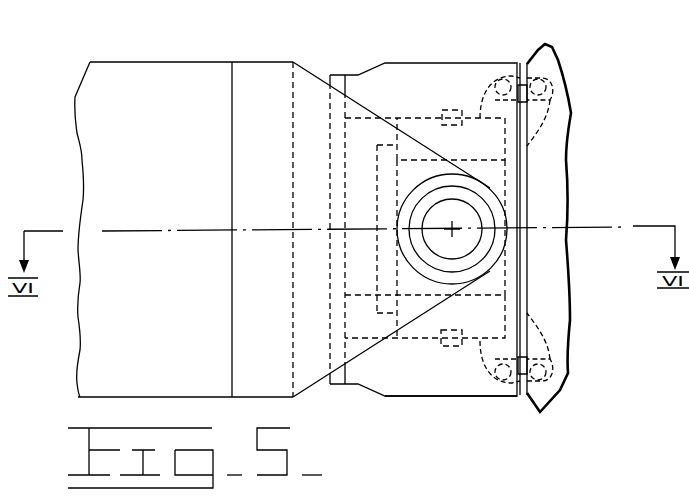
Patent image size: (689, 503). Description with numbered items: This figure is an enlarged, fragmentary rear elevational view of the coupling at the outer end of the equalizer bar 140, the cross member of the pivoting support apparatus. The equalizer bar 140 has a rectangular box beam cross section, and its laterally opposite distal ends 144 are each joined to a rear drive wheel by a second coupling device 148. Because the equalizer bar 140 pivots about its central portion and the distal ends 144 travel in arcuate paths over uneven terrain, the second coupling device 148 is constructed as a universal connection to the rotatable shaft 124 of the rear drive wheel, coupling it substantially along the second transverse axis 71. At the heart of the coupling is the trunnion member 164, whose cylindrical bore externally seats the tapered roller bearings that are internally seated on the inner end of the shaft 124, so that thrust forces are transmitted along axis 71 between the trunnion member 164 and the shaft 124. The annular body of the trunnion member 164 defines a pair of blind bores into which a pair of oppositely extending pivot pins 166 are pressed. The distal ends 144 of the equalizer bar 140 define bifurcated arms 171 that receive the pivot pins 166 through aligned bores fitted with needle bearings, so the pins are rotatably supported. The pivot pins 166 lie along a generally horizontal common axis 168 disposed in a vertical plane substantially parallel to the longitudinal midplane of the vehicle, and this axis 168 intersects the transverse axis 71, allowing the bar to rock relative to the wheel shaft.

The equalizer bar 140 is at (78, 104).
The distal ends 144 is at (256, 66).
The second coupling device 148 is at (439, 58).
The shaft 124 is at (566, 116).
The second transverse axis 71 is at (205, 231).
The common axis 168 is at (455, 227).
The pivot pins 166 is at (482, 240).
The bifurcated arms 171 is at (407, 306).
The trunnion member 164 is at (433, 385).